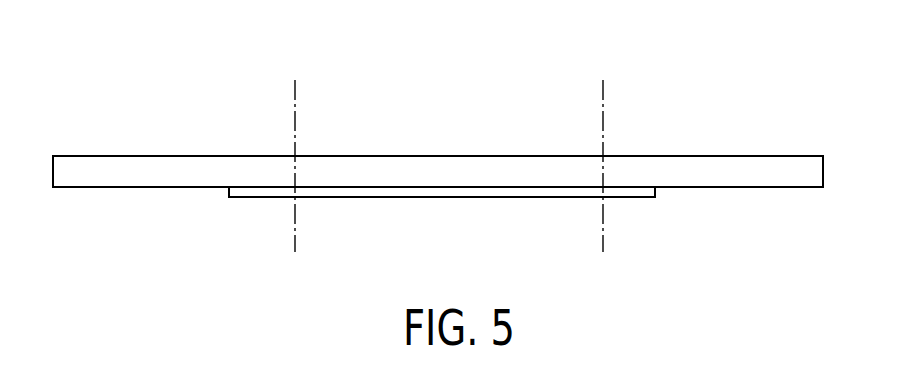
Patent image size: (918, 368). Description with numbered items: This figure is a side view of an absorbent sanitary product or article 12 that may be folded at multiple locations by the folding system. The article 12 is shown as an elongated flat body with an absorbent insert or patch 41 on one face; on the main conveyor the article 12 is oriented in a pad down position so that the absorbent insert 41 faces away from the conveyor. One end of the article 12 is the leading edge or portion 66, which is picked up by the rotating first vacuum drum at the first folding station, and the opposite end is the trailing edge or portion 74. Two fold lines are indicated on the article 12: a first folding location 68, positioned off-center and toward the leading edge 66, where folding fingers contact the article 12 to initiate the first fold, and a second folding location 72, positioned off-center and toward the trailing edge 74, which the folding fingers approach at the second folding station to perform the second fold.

The article 12 is at (678, 45).
The absorbent insert 41 is at (442, 197).
The leading edge 66 is at (793, 147).
The first folding location 68 is at (618, 145).
The second folding location 72 is at (287, 143).
The trailing edge 74 is at (53, 148).